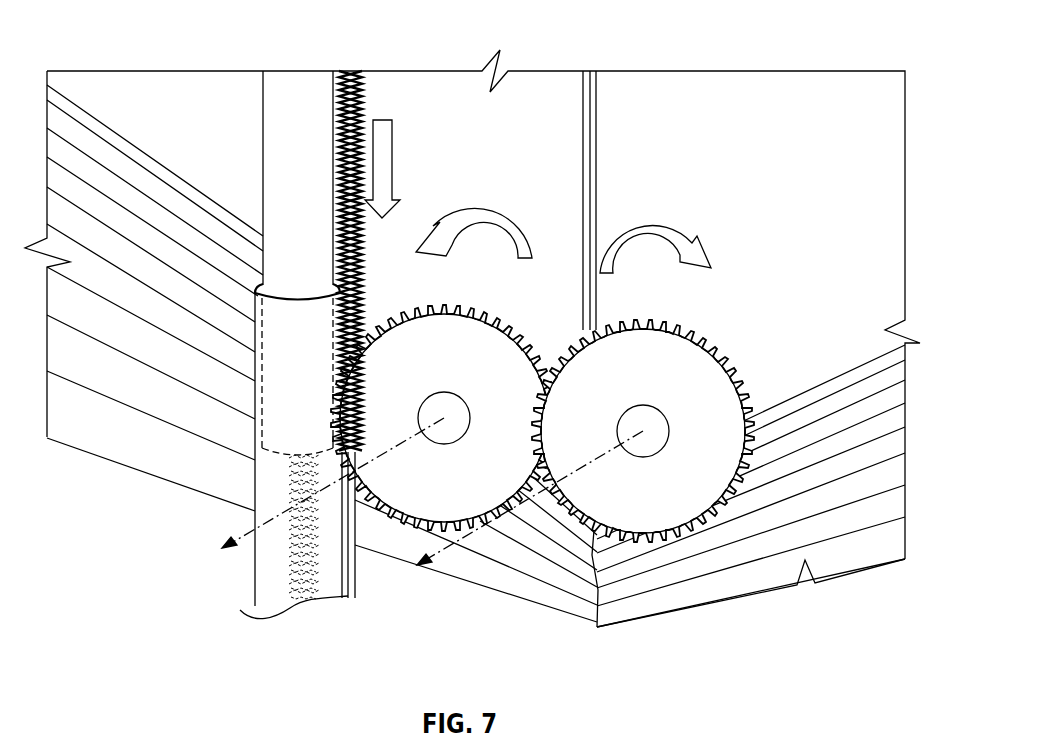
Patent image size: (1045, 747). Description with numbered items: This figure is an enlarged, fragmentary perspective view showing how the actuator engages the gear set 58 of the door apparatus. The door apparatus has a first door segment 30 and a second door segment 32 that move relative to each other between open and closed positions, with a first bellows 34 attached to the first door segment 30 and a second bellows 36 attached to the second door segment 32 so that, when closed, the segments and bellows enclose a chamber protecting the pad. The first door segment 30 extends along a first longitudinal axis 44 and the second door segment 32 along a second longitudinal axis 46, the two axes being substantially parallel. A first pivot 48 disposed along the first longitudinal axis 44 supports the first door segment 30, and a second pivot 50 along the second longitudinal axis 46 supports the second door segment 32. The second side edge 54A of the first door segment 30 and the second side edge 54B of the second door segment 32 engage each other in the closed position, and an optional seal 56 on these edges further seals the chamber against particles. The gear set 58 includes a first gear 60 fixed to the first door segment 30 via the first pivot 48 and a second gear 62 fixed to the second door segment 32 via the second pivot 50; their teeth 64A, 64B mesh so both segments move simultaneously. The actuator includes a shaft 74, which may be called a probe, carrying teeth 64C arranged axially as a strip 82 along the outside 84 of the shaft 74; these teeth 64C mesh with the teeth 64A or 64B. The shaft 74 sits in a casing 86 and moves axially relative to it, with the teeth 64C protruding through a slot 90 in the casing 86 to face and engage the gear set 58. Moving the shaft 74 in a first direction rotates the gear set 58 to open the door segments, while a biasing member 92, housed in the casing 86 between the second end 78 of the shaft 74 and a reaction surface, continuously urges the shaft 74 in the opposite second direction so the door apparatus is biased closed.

The first door segment 30 is at (825, 283).
The second door segment 32 is at (108, 88).
The first bellows 34 is at (738, 582).
The second bellows 36 is at (105, 458).
The first longitudinal axis 44 is at (430, 560).
The second longitudinal axis 46 is at (233, 537).
The first pivot 48 is at (640, 425).
The second pivot 50 is at (440, 400).
The second side edge of the first door segment 54A is at (598, 112).
The second side edge of the second door segment 54B is at (580, 92).
The seal 56 is at (590, 177).
The gear set 58 is at (680, 636).
The first gear 60 is at (712, 405).
The second gear 62 is at (458, 363).
The teeth of the first gear 64A is at (690, 333).
The teeth of the second gear 64B is at (405, 306).
The teeth of the shaft 64C is at (366, 107).
The shaft 74 is at (270, 160).
The second end 78 is at (268, 460).
The strip 82 is at (332, 92).
The outside 84 is at (288, 230).
The casing 86 is at (262, 582).
The slot 90 is at (336, 288).
The biasing member 92 is at (357, 592).